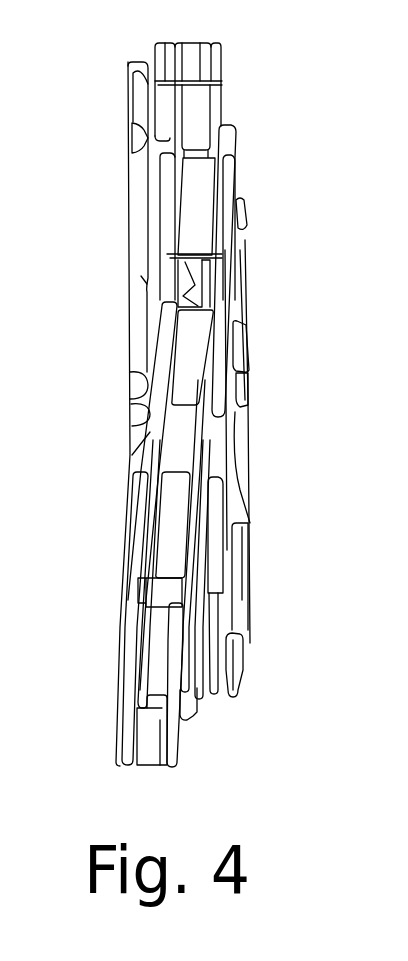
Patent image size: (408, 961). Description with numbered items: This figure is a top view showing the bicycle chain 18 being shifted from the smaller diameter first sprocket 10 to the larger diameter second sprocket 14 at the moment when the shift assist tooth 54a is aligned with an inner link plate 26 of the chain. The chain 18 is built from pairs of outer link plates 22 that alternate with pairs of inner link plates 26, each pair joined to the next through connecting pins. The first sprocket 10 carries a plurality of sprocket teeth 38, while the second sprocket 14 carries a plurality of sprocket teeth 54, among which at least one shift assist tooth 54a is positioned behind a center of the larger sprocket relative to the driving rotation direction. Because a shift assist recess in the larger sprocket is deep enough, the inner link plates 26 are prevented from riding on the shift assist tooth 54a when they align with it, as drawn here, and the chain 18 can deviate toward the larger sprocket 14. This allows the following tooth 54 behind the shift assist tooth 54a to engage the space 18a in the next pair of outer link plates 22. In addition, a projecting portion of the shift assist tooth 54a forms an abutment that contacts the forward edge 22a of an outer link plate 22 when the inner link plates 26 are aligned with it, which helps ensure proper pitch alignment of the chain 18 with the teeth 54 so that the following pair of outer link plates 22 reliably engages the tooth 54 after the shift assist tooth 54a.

The first sprocket 10 is at (260, 213).
The second sprocket 14 is at (118, 144).
The bicycle chain 18 is at (115, 733).
The space between outer link plates 18a is at (157, 596).
The outer link plate 22 is at (163, 175).
The forward edge of outer link plate 22a is at (133, 375).
The inner link plate 26 is at (150, 450).
The sprocket teeth 38 is at (245, 637).
The sprocket teeth 54 is at (129, 66).
The shift assist tooth 54a is at (143, 416).